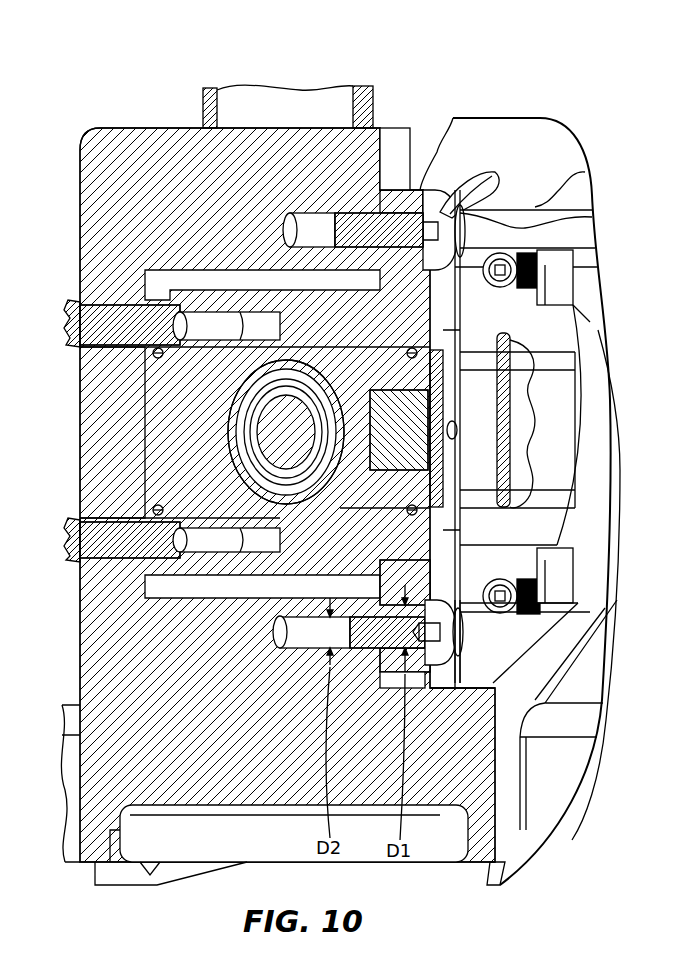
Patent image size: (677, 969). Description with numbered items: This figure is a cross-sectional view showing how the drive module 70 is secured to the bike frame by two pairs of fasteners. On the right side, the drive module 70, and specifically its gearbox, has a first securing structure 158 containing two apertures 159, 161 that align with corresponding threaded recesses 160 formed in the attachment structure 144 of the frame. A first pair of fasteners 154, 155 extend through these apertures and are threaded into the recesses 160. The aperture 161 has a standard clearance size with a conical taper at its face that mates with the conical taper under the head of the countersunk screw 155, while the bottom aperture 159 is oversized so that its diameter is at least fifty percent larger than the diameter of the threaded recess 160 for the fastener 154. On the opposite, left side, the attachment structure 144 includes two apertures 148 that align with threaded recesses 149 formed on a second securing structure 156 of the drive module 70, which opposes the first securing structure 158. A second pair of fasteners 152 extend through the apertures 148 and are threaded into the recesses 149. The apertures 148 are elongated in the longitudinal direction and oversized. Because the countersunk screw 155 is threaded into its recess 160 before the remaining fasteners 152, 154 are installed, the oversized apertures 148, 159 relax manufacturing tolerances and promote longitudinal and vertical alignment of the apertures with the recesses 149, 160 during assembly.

The drive module 70 is at (605, 313).
The attachment structure 144 is at (80, 407).
The apertures 148 is at (110, 303).
The threaded recesses 149 is at (187, 295).
The second pair of fasteners 152 is at (60, 322).
The fastener 154 is at (452, 648).
The countersunk screw 155 is at (487, 187).
The second securing structure 156 is at (170, 455).
The first securing structure 158 is at (400, 190).
The aperture 159 is at (430, 680).
The threaded recesses 160 is at (333, 213).
The aperture 161 is at (380, 205).